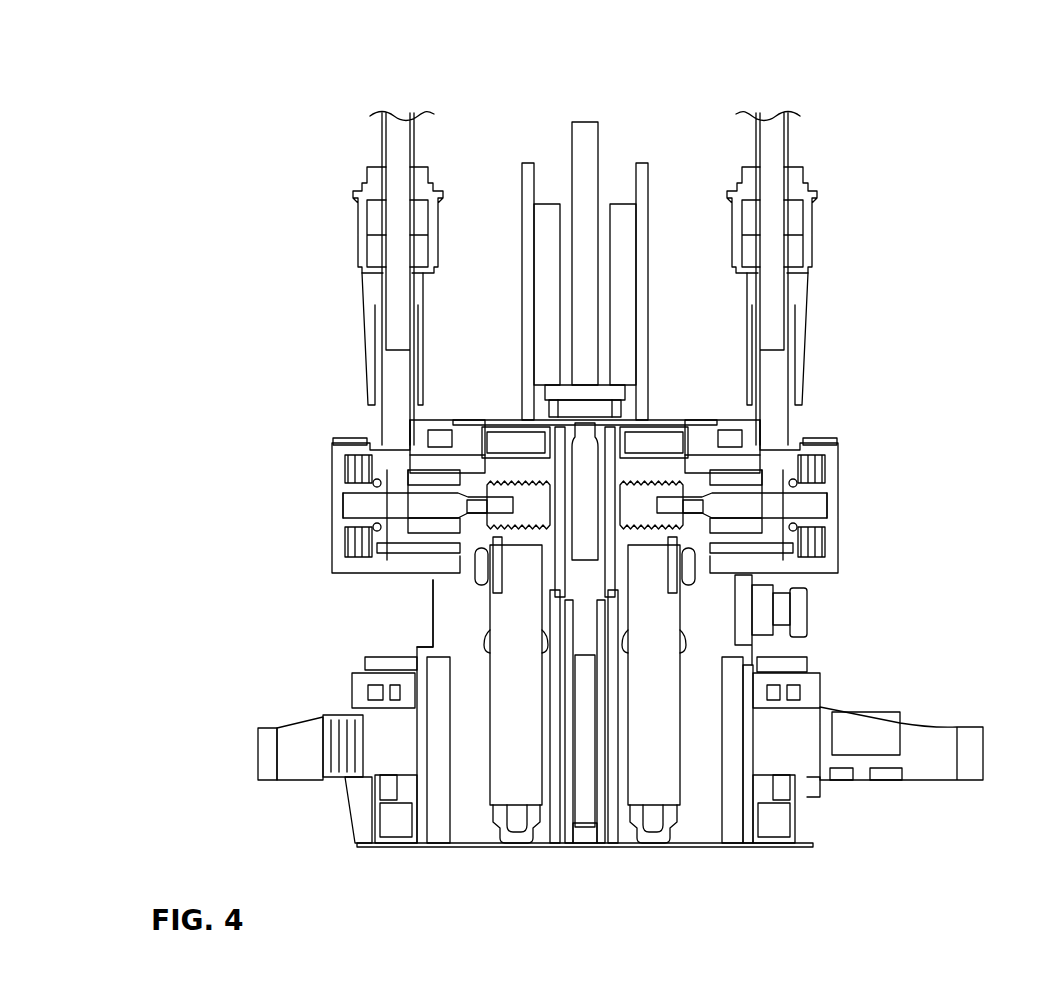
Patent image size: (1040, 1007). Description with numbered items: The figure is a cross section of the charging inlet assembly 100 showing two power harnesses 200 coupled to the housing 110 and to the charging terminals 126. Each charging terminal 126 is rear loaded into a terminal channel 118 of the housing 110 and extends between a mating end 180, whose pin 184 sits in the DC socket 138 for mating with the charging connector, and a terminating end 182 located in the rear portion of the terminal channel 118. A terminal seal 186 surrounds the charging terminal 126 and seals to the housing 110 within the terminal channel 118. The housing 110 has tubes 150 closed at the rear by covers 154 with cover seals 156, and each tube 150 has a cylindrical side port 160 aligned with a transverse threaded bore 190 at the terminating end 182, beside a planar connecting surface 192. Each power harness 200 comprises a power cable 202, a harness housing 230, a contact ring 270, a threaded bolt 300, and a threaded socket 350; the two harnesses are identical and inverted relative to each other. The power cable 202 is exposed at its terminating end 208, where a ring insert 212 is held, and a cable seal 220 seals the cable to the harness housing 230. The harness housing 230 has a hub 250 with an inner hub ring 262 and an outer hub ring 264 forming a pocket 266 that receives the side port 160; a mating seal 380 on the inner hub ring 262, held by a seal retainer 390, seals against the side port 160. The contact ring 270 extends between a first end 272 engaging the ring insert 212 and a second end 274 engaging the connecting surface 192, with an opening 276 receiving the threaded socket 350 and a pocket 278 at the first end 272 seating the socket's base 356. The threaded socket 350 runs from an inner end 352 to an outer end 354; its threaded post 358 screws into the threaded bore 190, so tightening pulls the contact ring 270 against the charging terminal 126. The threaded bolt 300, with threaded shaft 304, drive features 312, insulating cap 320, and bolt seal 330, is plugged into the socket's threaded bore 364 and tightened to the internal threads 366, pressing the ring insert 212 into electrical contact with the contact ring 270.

The charging inlet assembly 100 is at (930, 93).
The housing 110 is at (733, 828).
The terminal channel 118 is at (690, 820).
The charging terminal 126 is at (637, 783).
The DC socket 138 is at (468, 845).
The tube 150 is at (718, 430).
The cover 154 is at (670, 430).
The cover seal 156 is at (692, 430).
The side port 160 is at (798, 450).
The mating end 180 is at (693, 733).
The terminating end 182 is at (677, 787).
The pin 184 is at (738, 437).
The terminal seal 186 is at (808, 618).
The threaded bore 190 is at (712, 500).
The connecting surface 192 is at (722, 495).
The power harness 200 is at (238, 193).
The power cable 202 is at (400, 125).
The terminating end 208 is at (715, 505).
The ring insert 212 is at (440, 555).
The cable seal 220 is at (372, 243).
The harness housing 230 is at (363, 310).
The hub 250 is at (405, 488).
The inner hub ring 262 is at (420, 478).
The outer hub ring 264 is at (412, 483).
The pocket 266 is at (429, 437).
The contact ring 270 is at (445, 575).
The first end 272 is at (470, 505).
The second end 274 is at (470, 580).
The opening 276 is at (492, 482).
The pocket 278 is at (392, 490).
The threaded bolt 300 is at (395, 512).
The threaded shaft 304 is at (400, 535).
The drive features 312 is at (400, 520).
The insulating cap 320 is at (445, 822).
The bolt seal 330 is at (420, 545).
The threaded socket 350 is at (490, 835).
The inner end 352 is at (572, 560).
The outer end 354 is at (360, 460).
The base 356 is at (375, 432).
The threaded post 358 is at (435, 477).
The threaded bore 364 is at (395, 500).
The internal threads 366 is at (330, 702).
The mating seal 380 is at (832, 600).
The seal retainer 390 is at (838, 572).